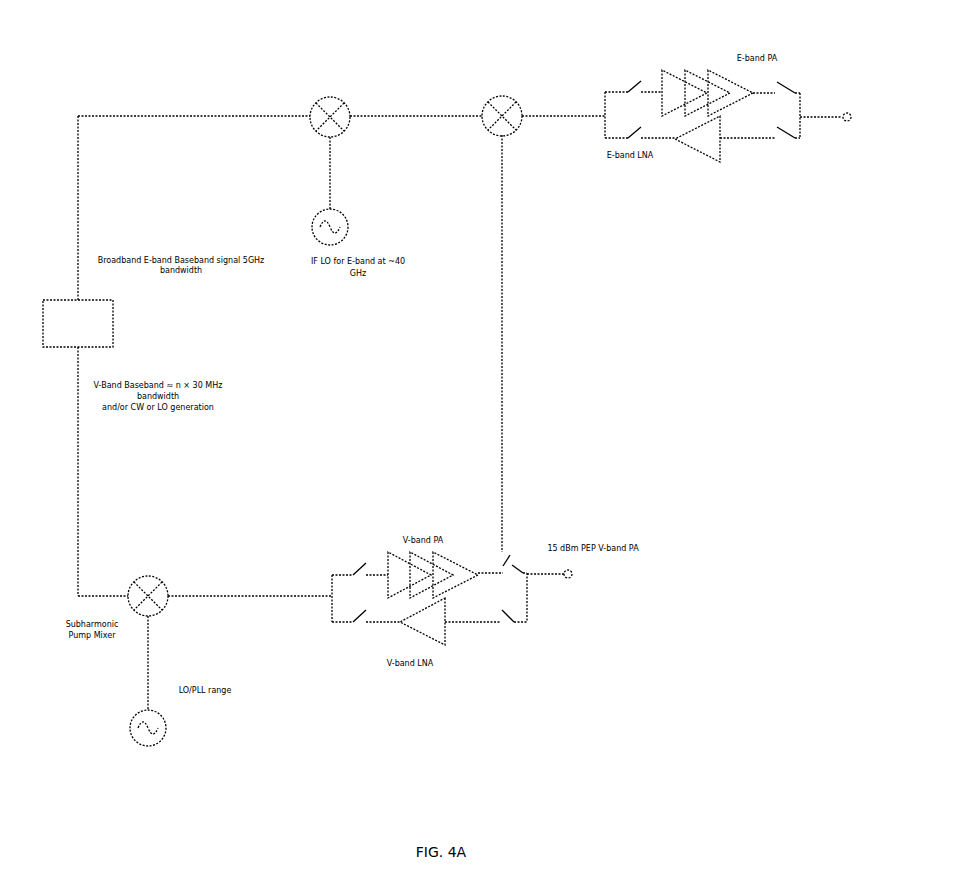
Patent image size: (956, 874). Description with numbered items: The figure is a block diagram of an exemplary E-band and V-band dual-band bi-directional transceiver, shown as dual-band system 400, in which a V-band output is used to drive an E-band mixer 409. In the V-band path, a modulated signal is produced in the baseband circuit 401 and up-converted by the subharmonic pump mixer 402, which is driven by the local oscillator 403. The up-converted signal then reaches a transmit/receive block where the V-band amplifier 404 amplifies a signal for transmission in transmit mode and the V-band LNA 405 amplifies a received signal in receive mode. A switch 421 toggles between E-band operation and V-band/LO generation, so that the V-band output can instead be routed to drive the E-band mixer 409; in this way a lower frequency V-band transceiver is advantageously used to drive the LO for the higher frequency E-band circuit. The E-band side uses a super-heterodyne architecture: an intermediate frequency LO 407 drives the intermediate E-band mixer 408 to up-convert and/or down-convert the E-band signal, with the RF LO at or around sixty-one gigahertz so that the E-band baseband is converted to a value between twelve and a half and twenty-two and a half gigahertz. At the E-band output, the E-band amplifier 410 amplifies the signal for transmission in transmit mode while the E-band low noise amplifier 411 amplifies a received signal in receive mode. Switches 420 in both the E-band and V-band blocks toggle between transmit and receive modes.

The dual-band system 400 is at (198, 70).
The baseband circuit 401 is at (116, 306).
The subharmonic pump mixer 402 is at (140, 617).
The local oscillator 403 is at (120, 727).
The V-band amplifier 404 is at (388, 556).
The V-band LNA 405 is at (455, 645).
The intermediate frequency LO 407 is at (310, 229).
The intermediate E-band mixer 408 is at (340, 128).
The E-band mixer 409 is at (507, 95).
The E-band amplifier 410 is at (682, 72).
The E-band low noise amplifier 411 is at (705, 155).
The switches 420 is at (793, 92).
The switch 421 is at (494, 560).